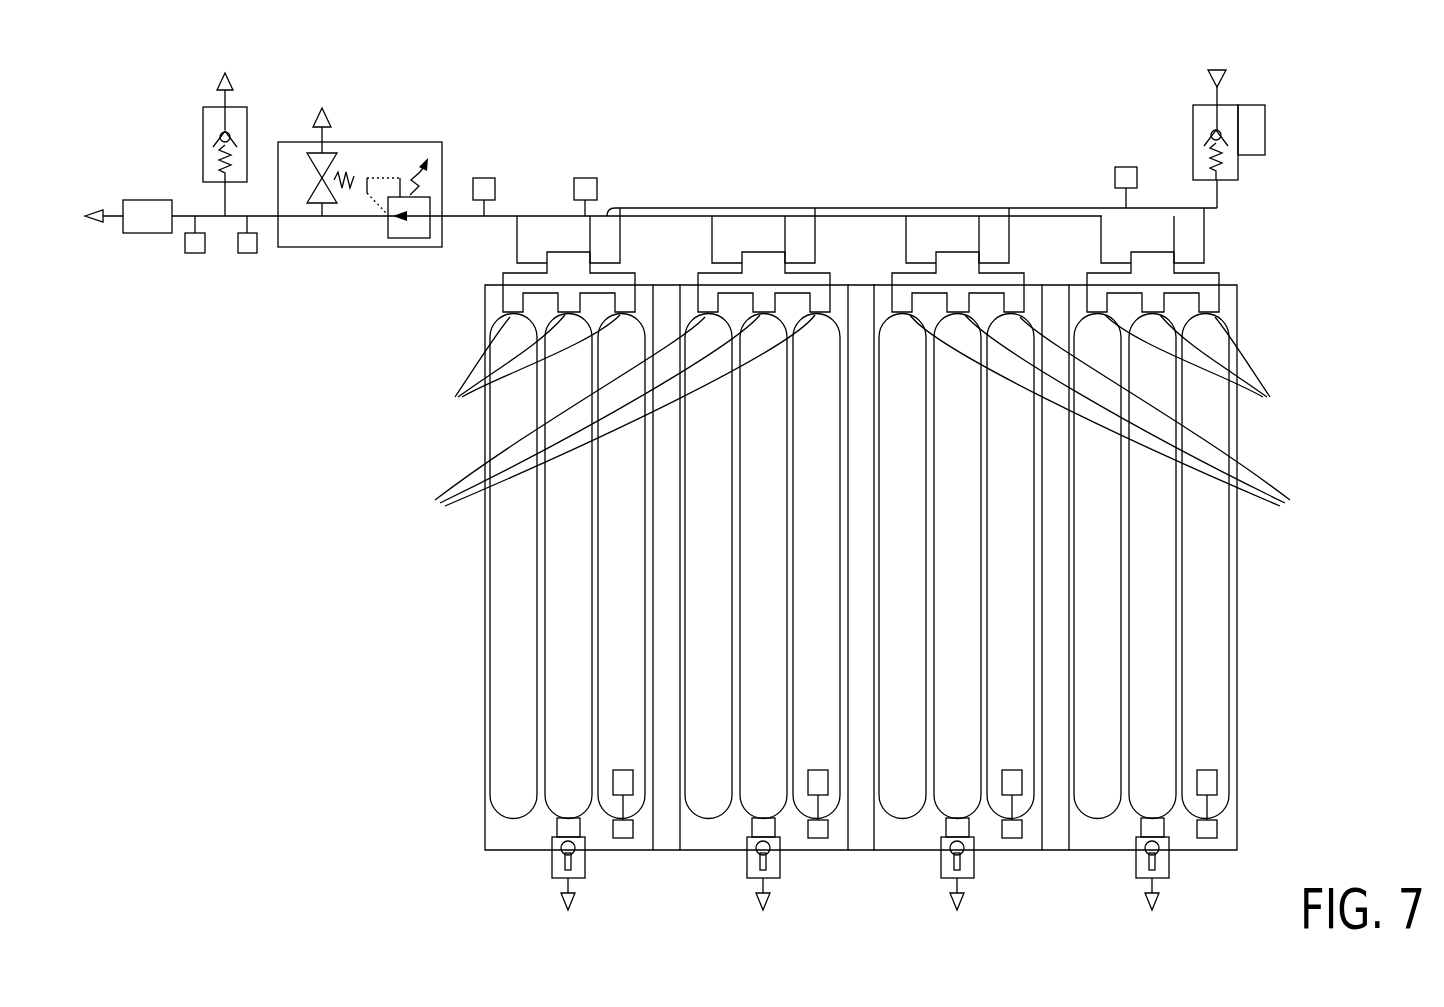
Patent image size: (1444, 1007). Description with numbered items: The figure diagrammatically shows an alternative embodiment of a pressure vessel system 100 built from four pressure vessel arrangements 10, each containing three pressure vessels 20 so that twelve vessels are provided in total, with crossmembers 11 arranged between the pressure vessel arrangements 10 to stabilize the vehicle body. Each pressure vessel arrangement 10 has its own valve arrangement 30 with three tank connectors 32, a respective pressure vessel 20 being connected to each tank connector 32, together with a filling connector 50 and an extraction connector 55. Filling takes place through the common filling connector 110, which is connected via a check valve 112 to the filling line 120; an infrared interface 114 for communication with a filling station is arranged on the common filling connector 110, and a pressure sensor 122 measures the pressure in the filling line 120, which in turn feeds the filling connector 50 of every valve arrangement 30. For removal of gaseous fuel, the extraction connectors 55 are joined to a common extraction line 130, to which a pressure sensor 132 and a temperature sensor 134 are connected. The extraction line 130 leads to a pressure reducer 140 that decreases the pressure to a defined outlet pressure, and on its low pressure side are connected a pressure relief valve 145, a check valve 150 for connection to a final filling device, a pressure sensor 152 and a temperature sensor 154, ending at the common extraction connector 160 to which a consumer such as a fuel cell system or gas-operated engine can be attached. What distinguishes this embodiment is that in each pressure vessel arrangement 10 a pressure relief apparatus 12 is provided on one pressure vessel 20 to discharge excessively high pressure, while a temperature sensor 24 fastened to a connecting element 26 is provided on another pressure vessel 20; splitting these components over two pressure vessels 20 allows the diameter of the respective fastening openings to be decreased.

The pressure vessel arrangement 10 is at (861, 621).
The crossmember 11 is at (871, 605).
The pressure relief apparatus 12 is at (880, 880).
The pressure vessel 20 is at (859, 566).
The temperature sensor 24 is at (1217, 785).
The connecting element 26 is at (910, 858).
The valve arrangement 30 is at (848, 266).
The tank connector 32 is at (862, 426).
The filling connector 50 is at (1182, 262).
The extraction connector 55 is at (1127, 260).
The pressure vessel system 100 is at (295, 762).
The common filling connector 110 is at (1213, 105).
The check valve 112 is at (1207, 132).
The infrared interface 114 is at (1257, 138).
The filling line 120 is at (1023, 207).
The pressure sensor 122 is at (1117, 177).
The extraction line 130 is at (768, 210).
The pressure sensor 132 is at (484, 178).
The temperature sensor 134 is at (586, 178).
The pressure reducer 140 is at (398, 238).
The pressure relief valve 145 is at (330, 148).
The check valve 150 is at (212, 123).
The pressure sensor 152 is at (247, 257).
The temperature sensor 154 is at (192, 257).
The common extraction connector 160 is at (138, 223).